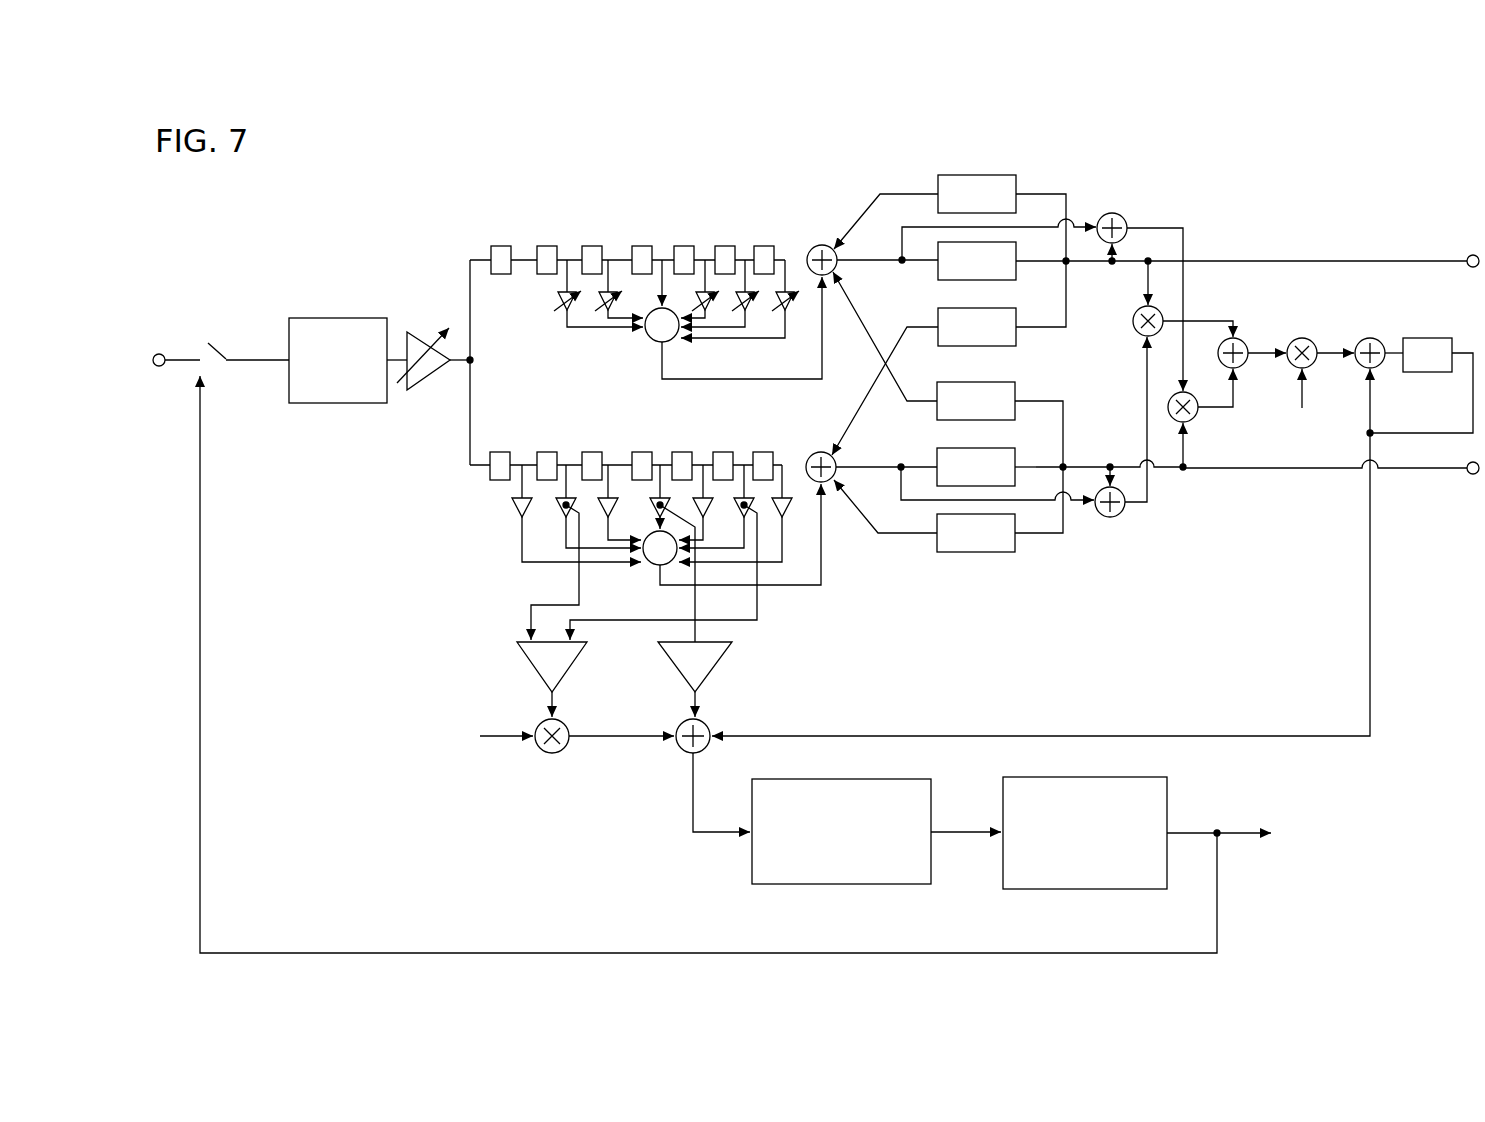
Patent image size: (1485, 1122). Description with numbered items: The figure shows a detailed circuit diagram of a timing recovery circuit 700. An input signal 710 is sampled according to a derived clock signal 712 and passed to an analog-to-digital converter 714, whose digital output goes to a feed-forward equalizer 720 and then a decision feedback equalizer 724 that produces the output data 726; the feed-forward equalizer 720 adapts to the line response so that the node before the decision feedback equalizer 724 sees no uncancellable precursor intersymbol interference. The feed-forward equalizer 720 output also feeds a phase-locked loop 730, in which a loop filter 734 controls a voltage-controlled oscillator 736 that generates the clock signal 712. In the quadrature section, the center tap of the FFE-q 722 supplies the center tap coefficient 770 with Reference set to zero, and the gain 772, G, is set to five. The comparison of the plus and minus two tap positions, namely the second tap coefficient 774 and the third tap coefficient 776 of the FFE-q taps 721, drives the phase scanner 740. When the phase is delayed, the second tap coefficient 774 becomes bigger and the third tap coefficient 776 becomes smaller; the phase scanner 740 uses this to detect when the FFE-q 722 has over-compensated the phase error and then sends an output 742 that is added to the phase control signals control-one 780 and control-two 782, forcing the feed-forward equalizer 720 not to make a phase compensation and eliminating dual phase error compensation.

The timing recovery circuit 700 is at (740, 205).
The input signal 710 is at (181, 327).
The clock signal 712 is at (199, 489).
The analog-to-digital converter 714 is at (347, 315).
The feed-forward equalizer 720 is at (612, 225).
The FFE-q tap multipliers 721 is at (558, 318).
The FFE-q 722 is at (608, 440).
The decision feedback equalizer 724 is at (975, 172).
The output data 726 is at (1443, 225).
The phase-locked loop 730 is at (467, 782).
The loop filter 734 is at (840, 776).
The voltage-controlled oscillator 736 is at (1073, 776).
The phase scanner 740 is at (548, 756).
The phase scanner output 742 is at (606, 740).
The H(n1) 770 is at (700, 601).
The gain 772 is at (752, 656).
The H(n2) 774 is at (822, 605).
The H(n3) 776 is at (515, 587).
The control-1 780 is at (770, 698).
The control-2 782 is at (1070, 706).